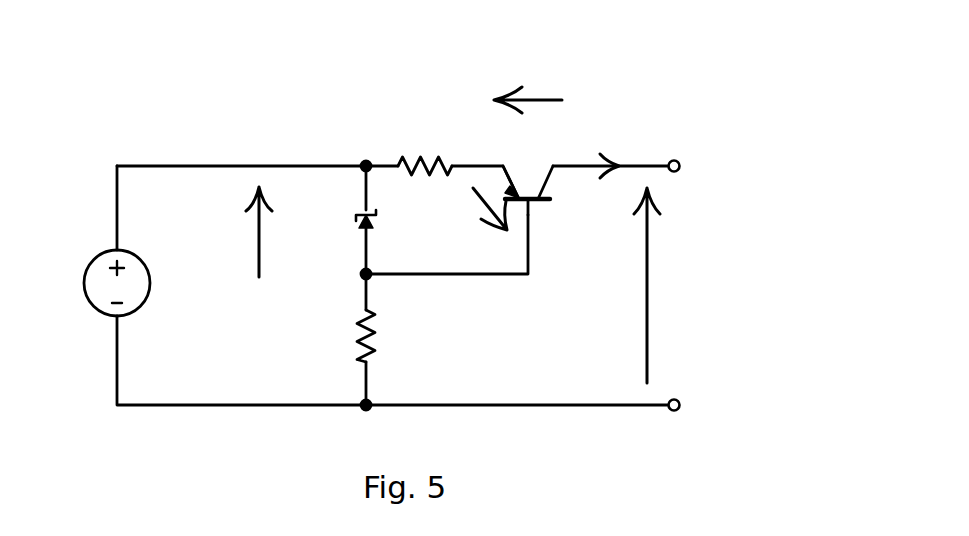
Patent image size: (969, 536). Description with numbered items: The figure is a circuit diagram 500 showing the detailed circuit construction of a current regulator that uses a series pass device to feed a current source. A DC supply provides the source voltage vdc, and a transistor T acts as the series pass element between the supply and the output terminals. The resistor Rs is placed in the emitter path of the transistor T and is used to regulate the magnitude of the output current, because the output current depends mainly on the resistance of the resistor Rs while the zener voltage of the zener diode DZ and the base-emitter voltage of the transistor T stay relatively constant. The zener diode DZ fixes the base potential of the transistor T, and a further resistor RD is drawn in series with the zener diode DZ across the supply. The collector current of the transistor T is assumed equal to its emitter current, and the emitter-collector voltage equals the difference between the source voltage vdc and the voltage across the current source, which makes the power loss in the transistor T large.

The circuit diagram 500 is at (432, 228).
The resistor Rs is at (425, 149).
The transistor T is at (528, 172).
The zener diode DZ is at (334, 225).
The diode bias resistor RD is at (339, 336).
The source voltage vdc is at (88, 283).